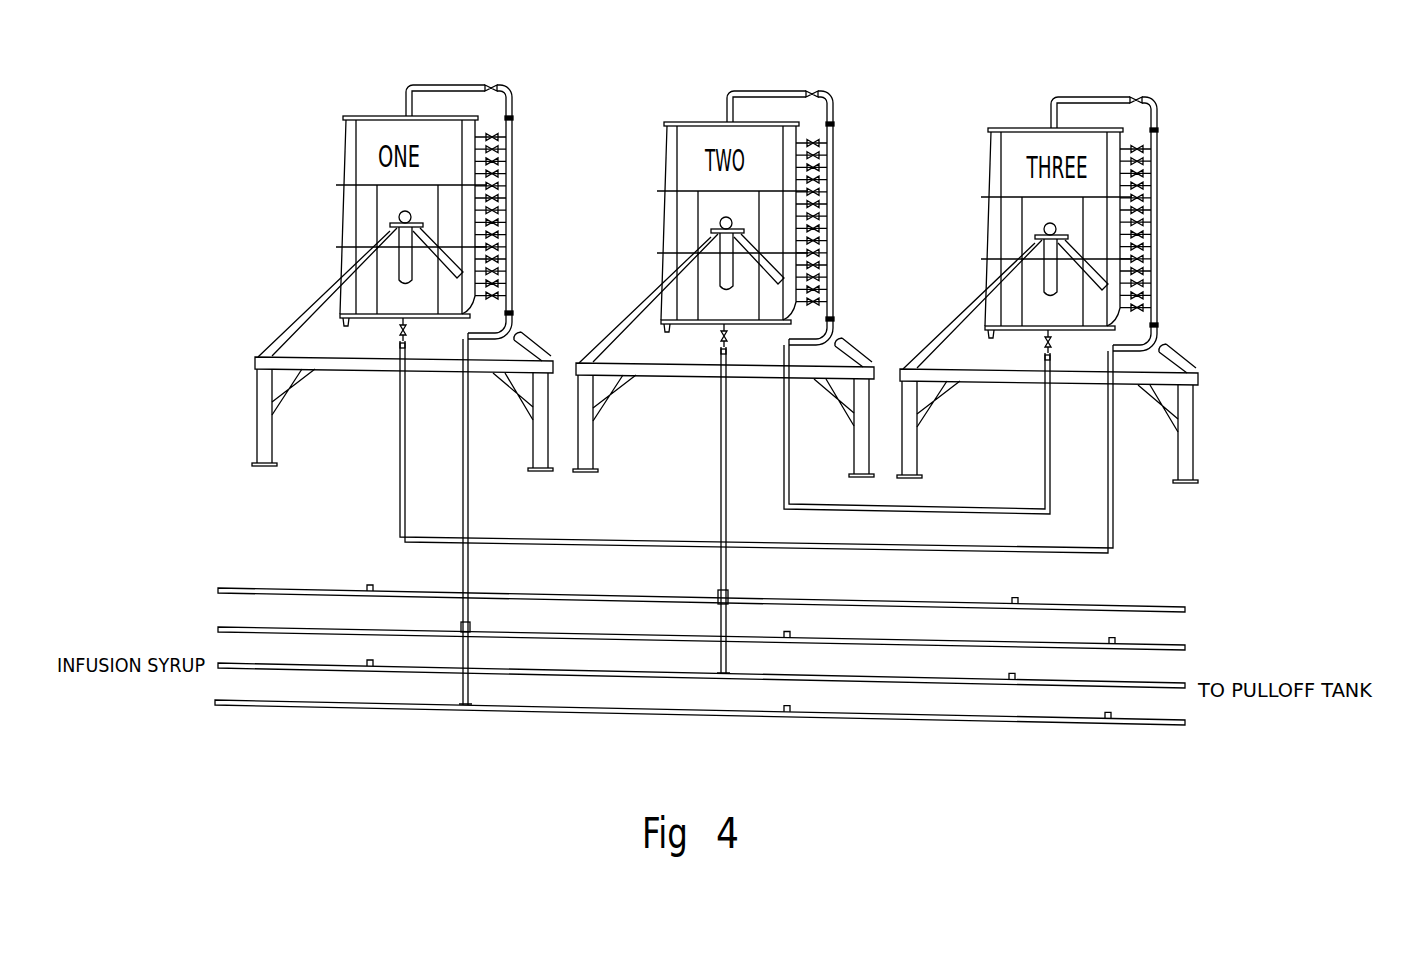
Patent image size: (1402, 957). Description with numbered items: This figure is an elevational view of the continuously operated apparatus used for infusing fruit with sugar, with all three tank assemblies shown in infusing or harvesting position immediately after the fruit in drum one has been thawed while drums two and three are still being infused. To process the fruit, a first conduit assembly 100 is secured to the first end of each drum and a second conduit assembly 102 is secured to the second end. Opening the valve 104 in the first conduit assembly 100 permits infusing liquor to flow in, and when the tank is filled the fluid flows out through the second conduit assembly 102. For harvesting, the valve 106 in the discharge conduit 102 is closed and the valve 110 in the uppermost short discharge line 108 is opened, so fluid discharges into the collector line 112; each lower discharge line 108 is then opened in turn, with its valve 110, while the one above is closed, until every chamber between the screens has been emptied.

The first conduit assembly 100 is at (397, 423).
The second conduit assembly 102 is at (437, 85).
The valve 104 is at (397, 335).
The valve 106 is at (487, 84).
The short discharge line 108 is at (483, 136).
The valve 110 is at (497, 137).
The collector line 112 is at (510, 210).